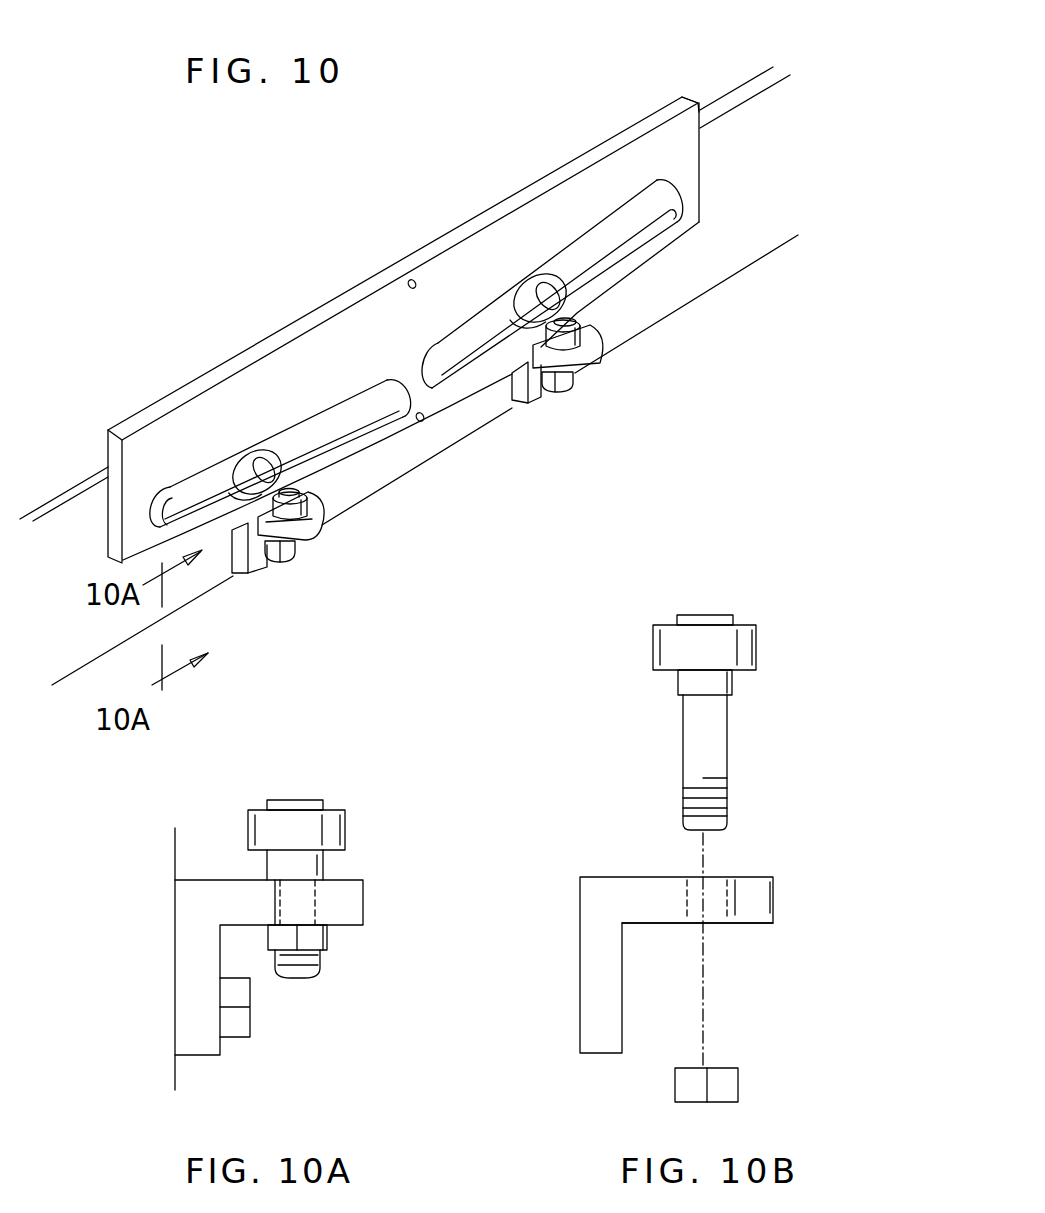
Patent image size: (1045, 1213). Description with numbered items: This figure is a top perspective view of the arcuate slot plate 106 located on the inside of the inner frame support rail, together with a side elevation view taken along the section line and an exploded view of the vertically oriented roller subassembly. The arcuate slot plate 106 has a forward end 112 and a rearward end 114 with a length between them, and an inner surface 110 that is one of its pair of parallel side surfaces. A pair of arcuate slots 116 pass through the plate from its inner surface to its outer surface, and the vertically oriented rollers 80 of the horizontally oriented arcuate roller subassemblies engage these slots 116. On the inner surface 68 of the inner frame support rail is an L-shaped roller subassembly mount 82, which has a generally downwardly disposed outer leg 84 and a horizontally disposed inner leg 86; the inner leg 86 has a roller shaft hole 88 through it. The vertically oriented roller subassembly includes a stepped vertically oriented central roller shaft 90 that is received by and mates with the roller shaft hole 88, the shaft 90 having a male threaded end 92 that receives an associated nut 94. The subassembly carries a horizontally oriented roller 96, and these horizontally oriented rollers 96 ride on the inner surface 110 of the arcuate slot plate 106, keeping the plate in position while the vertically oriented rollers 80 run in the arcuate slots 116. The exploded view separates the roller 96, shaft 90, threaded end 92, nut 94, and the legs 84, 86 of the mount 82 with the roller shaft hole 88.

In FIG. 10, the inner surface 68 is at (733, 173).
In FIG. 10, the vertically oriented roller 80 is at (237, 463).
In FIG. 10, the L-shaped roller subassembly mount 82 is at (279, 571).
In FIG. 10, the downwardly disposed outer leg 84 is at (233, 574).
In FIG. 10A, the downwardly disposed outer leg 84 is at (192, 1003).
In FIG. 10B, the downwardly disposed outer leg 84 is at (602, 998).
In FIG. 10, the horizontally disposed inner leg 86 is at (318, 530).
In FIG. 10B, the horizontally disposed inner leg 86 is at (663, 907).
In FIG. 10A, the roller shaft hole 88 is at (345, 903).
In FIG. 10B, the roller shaft hole 88 is at (718, 893).
In FIG. 10B, the stepped vertically oriented central roller shaft 90 is at (700, 728).
In FIG. 10B, the male threaded end 92 is at (723, 810).
In FIG. 10A, the nut 94 is at (320, 943).
In FIG. 10B, the nut 94 is at (730, 1068).
In FIG. 10, the horizontally oriented roller 96 is at (325, 494).
In FIG. 10A, the horizontally oriented roller 96 is at (310, 820).
In FIG. 10B, the horizontally oriented roller 96 is at (670, 647).
In FIG. 10, the arcuate slot plate 106 is at (632, 124).
In FIG. 10, the inner surface 110 is at (337, 333).
In FIG. 10, the forward end 112 is at (688, 102).
In FIG. 10, the rearward end 114 is at (150, 462).
In FIG. 10, the arcuate slots 116 is at (700, 192).